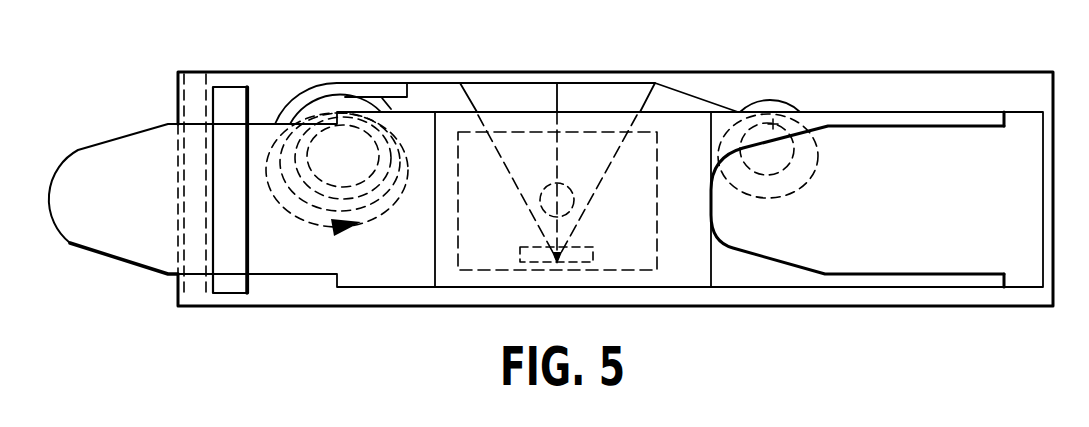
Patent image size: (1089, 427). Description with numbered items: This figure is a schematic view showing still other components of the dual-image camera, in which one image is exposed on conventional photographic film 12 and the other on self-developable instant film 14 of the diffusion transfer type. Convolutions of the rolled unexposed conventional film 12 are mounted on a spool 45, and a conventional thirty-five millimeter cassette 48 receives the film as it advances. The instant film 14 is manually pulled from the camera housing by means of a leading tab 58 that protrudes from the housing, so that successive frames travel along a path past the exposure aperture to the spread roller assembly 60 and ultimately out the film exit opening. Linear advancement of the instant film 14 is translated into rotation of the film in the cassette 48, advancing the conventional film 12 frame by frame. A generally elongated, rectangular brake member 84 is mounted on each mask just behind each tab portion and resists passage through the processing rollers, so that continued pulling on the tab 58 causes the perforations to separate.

The conventional photographic film 12 is at (580, 82).
The instant film 14 is at (437, 72).
The spool 45 is at (773, 124).
The 35 mm cassette 48 is at (345, 97).
The leading tab 58 is at (93, 232).
The spread roller assembly 60 is at (192, 82).
The brake member 84 is at (233, 100).